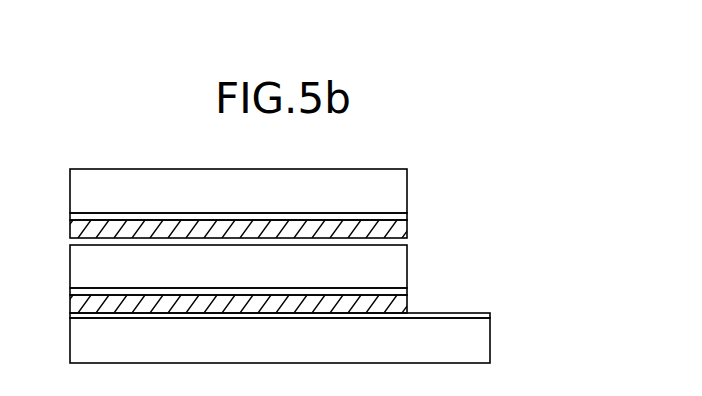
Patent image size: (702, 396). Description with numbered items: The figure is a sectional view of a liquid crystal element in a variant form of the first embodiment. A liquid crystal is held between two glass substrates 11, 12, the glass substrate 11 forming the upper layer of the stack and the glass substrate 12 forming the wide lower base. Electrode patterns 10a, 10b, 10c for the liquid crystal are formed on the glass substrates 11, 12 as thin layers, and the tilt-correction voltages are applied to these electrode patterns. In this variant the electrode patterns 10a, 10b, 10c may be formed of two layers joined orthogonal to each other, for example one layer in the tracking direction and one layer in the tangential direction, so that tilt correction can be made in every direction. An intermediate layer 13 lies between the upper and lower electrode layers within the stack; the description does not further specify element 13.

The glass substrate 11 is at (383, 168).
The electrode pattern 10a is at (407, 290).
The electrode pattern 10b is at (407, 238).
The electrode pattern 10c is at (407, 209).
The intermediate layer 13 is at (398, 269).
The glass substrate 12 is at (483, 348).